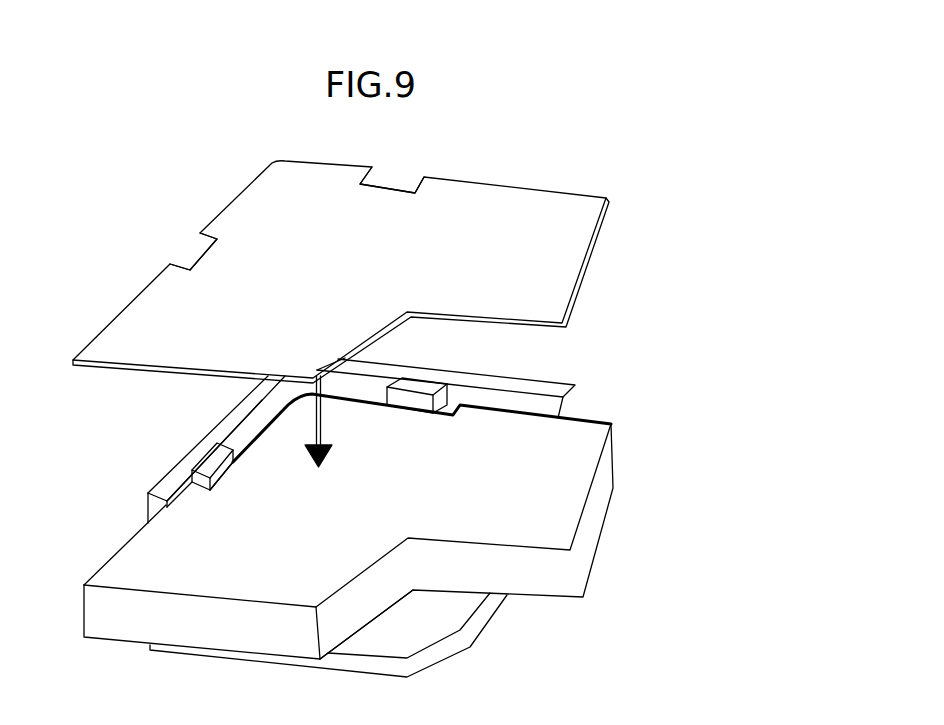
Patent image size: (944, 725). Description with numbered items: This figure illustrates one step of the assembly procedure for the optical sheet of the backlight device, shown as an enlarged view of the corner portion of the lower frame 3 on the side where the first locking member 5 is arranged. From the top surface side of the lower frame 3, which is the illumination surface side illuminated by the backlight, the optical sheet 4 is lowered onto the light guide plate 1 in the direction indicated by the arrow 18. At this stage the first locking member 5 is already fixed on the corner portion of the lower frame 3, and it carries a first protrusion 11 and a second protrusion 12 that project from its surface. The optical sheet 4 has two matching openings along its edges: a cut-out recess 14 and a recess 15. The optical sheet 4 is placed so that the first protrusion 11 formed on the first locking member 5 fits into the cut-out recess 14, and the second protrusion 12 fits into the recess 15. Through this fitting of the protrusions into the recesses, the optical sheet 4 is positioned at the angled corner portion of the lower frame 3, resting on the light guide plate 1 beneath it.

The light guide plate 1 is at (538, 505).
The lower frame 3 is at (560, 392).
The optical sheet 4 is at (495, 207).
The first locking member 5 is at (262, 411).
The first protrusion 11 is at (208, 461).
The second protrusion 12 is at (415, 388).
The cut-out recess 14 is at (192, 248).
The recess 15 is at (393, 177).
The arrow 18 is at (322, 427).